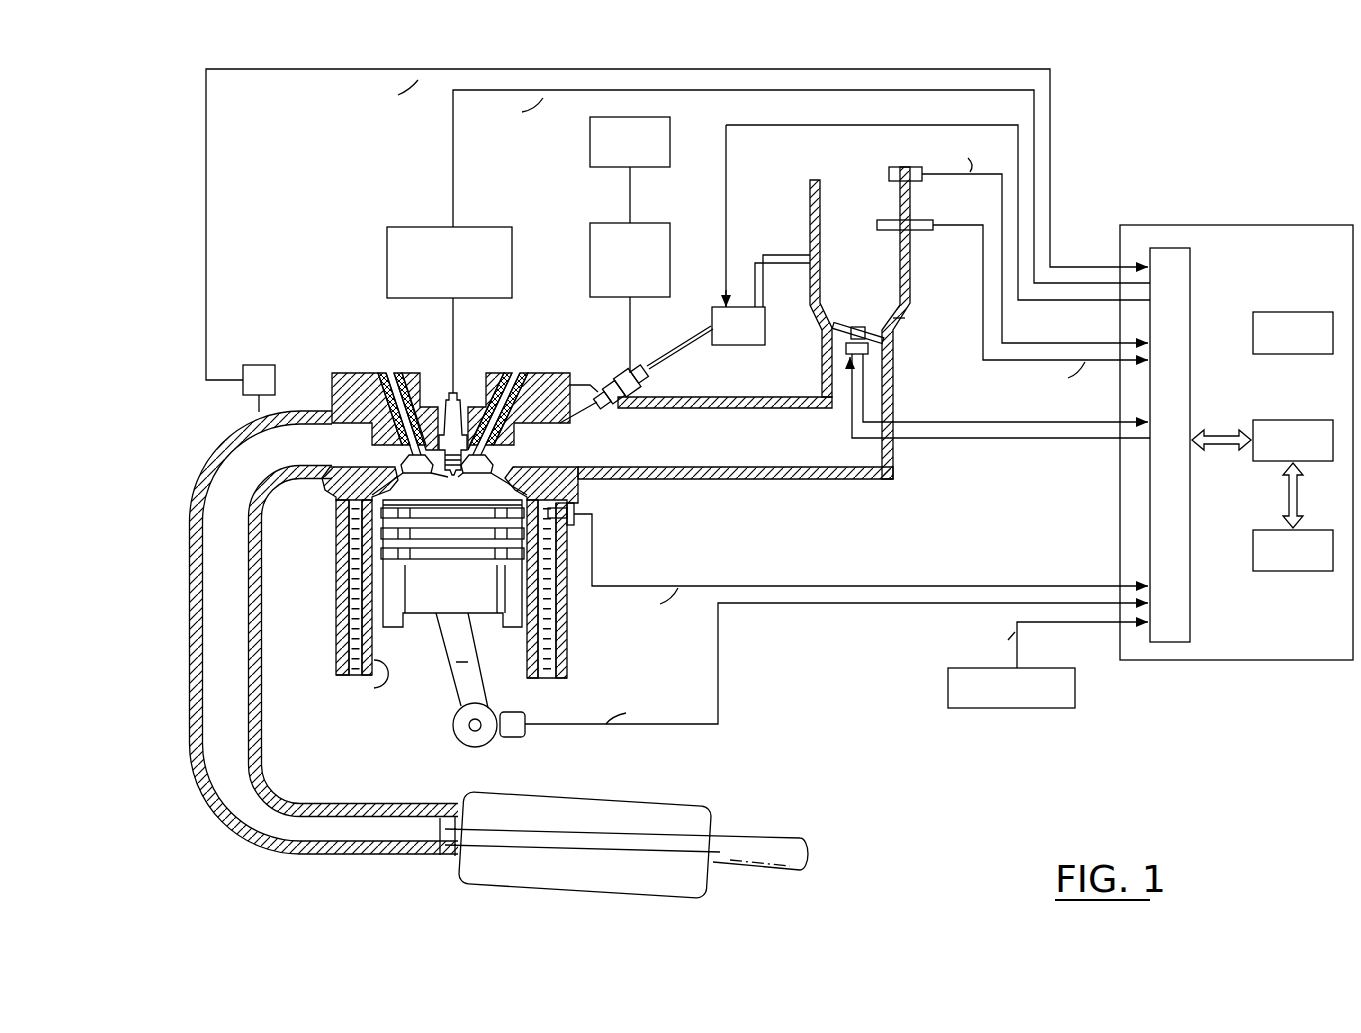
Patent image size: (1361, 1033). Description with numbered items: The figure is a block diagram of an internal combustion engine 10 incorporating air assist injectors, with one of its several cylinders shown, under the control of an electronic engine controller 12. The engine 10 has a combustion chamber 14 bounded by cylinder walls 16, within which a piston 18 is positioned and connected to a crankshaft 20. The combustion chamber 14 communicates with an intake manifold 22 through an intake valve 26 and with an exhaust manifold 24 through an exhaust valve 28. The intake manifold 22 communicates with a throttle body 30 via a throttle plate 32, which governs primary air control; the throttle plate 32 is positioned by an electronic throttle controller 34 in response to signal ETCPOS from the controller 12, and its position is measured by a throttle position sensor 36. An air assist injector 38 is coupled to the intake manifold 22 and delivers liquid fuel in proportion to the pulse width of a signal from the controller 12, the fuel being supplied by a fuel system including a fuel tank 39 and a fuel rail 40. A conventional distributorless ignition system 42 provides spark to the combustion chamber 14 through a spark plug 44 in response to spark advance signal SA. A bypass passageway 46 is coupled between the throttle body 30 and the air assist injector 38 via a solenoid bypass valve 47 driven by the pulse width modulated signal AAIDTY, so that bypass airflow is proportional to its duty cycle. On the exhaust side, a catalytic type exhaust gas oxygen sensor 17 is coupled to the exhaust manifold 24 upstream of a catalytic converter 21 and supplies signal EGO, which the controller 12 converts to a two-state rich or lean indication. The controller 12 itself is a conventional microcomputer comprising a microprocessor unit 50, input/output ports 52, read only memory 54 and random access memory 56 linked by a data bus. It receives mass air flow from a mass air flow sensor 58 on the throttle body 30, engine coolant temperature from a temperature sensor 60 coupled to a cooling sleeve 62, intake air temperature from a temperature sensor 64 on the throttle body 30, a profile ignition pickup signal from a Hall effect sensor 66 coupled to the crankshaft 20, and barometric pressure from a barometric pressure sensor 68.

The internal combustion engine 10 is at (346, 333).
The electronic engine controller 12 is at (1308, 225).
The combustion chamber 14 is at (423, 493).
The cylinder walls 16 is at (388, 662).
The exhaust gas oxygen sensor 17 is at (258, 363).
The piston 18 is at (440, 598).
The crankshaft 20 is at (455, 727).
The catalytic converter 21 is at (590, 793).
The intake manifold 22 is at (773, 450).
The exhaust manifold 24 is at (242, 455).
The intake valve 26 is at (520, 462).
The exhaust valve 28 is at (398, 460).
The throttle body 30 is at (818, 185).
The throttle plate 32 is at (842, 325).
The electronic throttle controller 34 is at (845, 348).
The throttle position sensor 36 is at (895, 325).
The air assist injector 38 is at (618, 375).
The fuel tank 39 is at (590, 140).
The fuel rail 40 is at (590, 230).
The distributorless ignition system 42 is at (402, 225).
The spark plug 44 is at (458, 395).
The bypass passageway 46 is at (757, 257).
The solenoid bypass valve 47 is at (728, 345).
The microprocessor unit 50 is at (1288, 420).
The input/output ports 52 is at (1193, 270).
The read only memory 54 is at (1305, 312).
The random access memory 56 is at (1292, 572).
The mass air flow sensor 58 is at (877, 220).
The temperature sensor 60 is at (575, 505).
The cooling sleeve 62 is at (560, 652).
The temperature sensor 64 is at (905, 165).
The Hall effect sensor 66 is at (525, 735).
The barometric pressure sensor 68 is at (948, 692).